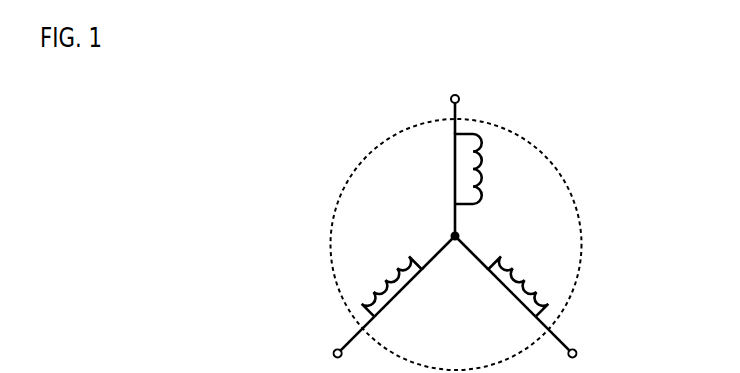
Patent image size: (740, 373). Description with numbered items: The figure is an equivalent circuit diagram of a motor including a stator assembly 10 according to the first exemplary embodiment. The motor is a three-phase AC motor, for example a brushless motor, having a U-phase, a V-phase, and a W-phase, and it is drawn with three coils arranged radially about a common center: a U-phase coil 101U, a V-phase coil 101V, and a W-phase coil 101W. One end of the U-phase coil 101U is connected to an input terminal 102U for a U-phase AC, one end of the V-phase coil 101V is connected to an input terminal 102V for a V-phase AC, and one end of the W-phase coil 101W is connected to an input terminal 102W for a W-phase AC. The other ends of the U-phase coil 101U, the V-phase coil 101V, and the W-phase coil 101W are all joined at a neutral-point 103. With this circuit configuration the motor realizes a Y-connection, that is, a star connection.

The stator assembly 10 is at (622, 78).
The U-phase coil 101U is at (488, 155).
The V-phase coil 101V is at (377, 269).
The W-phase coil 101W is at (536, 272).
The input terminal 102U is at (461, 97).
The input terminal 102V is at (332, 352).
The input terminal 102W is at (579, 351).
The neutral-point 103 is at (463, 233).